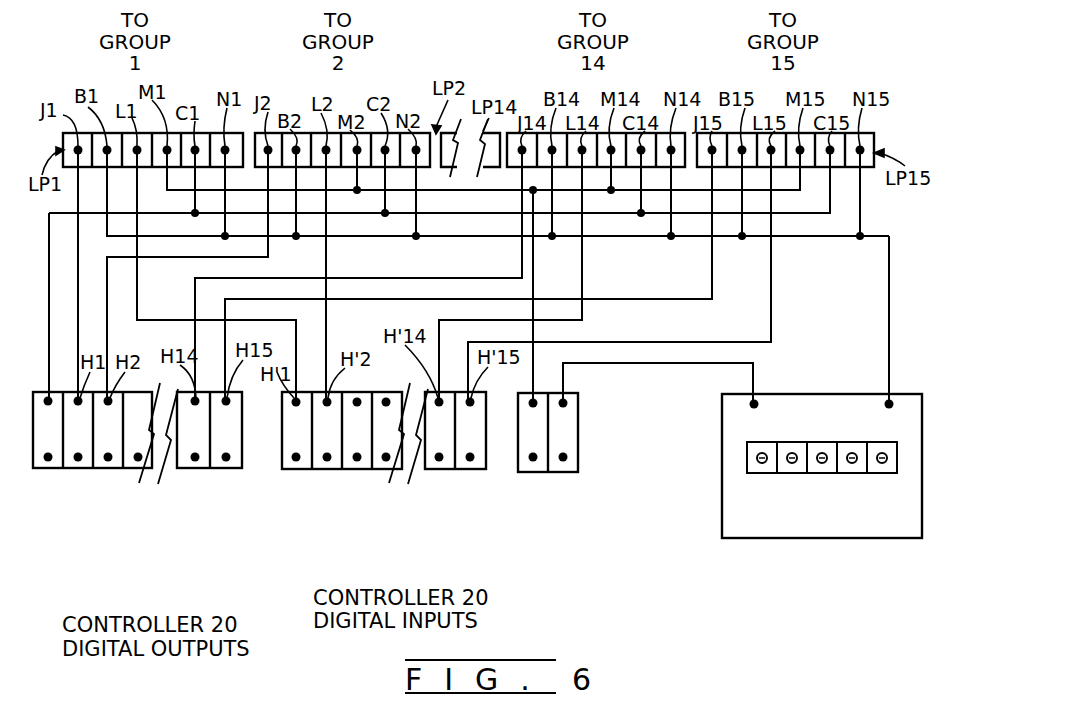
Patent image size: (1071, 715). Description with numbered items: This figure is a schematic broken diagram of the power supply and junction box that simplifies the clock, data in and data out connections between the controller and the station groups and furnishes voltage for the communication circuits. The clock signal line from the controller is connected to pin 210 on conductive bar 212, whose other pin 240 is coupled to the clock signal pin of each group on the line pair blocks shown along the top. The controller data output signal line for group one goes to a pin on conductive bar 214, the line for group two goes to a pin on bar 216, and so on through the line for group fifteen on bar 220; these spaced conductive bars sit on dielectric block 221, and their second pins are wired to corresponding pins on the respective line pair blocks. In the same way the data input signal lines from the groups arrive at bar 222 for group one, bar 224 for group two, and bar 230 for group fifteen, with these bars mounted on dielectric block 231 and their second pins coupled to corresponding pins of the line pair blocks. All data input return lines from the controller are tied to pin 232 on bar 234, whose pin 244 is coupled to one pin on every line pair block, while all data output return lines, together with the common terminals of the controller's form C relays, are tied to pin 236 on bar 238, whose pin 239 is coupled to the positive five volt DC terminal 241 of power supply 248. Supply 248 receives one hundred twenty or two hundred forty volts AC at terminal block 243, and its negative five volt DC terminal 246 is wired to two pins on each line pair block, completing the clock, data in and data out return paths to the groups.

The pin 210 is at (47, 460).
The conductive bar 212 is at (55, 396).
The conductive bar 214 is at (72, 437).
The bar 216 is at (101, 440).
The bar 220 is at (219, 437).
The dielectric block 221 is at (241, 466).
The bar 222 is at (291, 437).
The bar 224 is at (322, 437).
The bar 230 is at (476, 440).
The dielectric block 231 is at (486, 445).
The pin 232 is at (565, 460).
The bar 234 is at (535, 425).
The pin 236 is at (535, 460).
The bar 238 is at (568, 437).
The pin 239 is at (572, 401).
The pin 240 is at (46, 397).
The +5 VDC terminal 241 is at (758, 404).
The terminal block 243 is at (748, 458).
The pin 244 is at (528, 403).
The -5 VDC terminal 246 is at (885, 404).
The power supply 248 is at (818, 394).